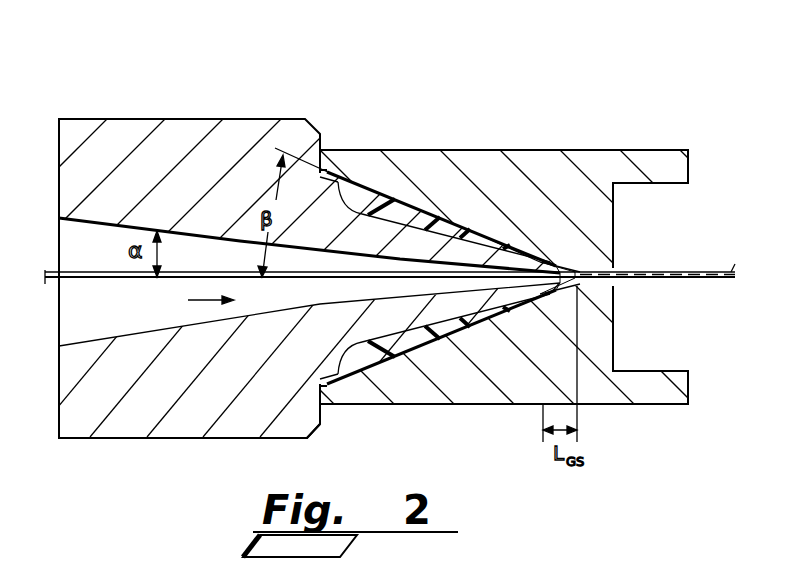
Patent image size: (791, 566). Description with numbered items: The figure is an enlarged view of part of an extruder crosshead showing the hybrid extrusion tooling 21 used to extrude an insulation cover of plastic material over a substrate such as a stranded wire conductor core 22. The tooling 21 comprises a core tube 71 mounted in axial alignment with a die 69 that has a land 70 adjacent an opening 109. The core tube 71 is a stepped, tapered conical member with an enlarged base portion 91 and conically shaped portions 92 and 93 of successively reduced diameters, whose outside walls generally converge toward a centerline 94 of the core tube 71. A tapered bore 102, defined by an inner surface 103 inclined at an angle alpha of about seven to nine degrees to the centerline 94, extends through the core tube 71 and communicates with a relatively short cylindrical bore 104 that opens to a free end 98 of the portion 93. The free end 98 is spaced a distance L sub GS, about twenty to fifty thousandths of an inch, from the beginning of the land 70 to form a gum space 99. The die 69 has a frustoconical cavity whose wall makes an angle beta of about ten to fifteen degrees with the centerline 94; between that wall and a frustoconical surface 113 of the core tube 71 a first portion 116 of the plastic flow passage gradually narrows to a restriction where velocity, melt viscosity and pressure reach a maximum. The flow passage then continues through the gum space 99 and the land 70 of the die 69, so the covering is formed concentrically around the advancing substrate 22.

The extrusion tooling 21 is at (458, 92).
The stranded wire conductor core 22 is at (117, 282).
The die 69 is at (604, 336).
The land 70 is at (618, 298).
The core tube 71 is at (263, 113).
The enlarged base portion 91 is at (178, 128).
The conically shaped portion 92 is at (324, 172).
The conically shaped portion 93 is at (376, 237).
The centerline 94 is at (32, 276).
The free end 98 is at (557, 268).
The gum space 99 is at (559, 266).
The tapered bore 102 is at (77, 310).
The inner surface 103 is at (138, 333).
The cylindrical bore 104 is at (481, 400).
The opening 109 is at (612, 268).
The frustoconical surface 113 is at (487, 245).
The first portion 116 is at (427, 220).